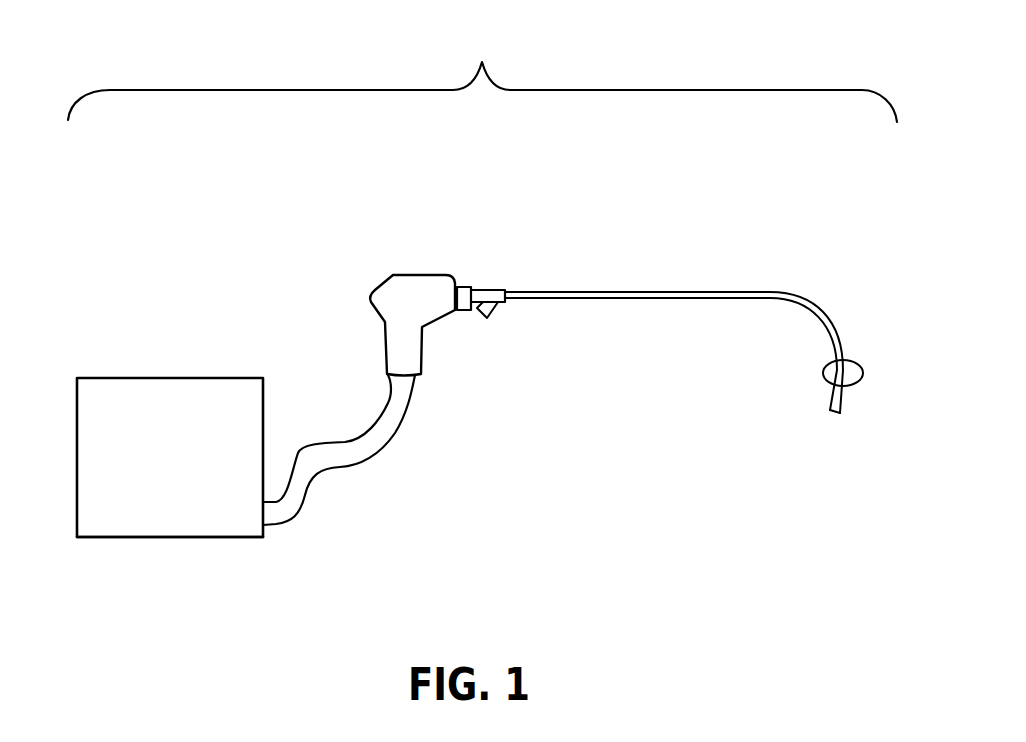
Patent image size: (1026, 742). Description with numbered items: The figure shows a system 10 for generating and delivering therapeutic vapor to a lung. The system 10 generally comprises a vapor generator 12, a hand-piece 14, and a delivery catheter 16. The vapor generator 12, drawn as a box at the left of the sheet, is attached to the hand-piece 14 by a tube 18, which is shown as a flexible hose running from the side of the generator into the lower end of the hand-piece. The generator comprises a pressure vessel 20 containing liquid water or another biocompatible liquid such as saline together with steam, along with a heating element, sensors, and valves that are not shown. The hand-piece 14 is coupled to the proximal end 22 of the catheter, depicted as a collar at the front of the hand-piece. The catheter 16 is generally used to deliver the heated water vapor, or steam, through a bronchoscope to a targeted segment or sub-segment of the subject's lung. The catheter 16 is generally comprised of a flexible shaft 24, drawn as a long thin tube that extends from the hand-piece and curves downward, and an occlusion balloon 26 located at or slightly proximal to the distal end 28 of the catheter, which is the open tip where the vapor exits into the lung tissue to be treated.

The system 10 is at (482, 77).
The vapor generator 12 is at (90, 324).
The hand-piece 14 is at (462, 362).
The delivery catheter 16 is at (657, 324).
The tube 18 is at (357, 467).
The pressure vessel 20 is at (143, 538).
The proximal end 22 is at (469, 254).
The flexible shaft 24 is at (643, 292).
The occlusion balloon 26 is at (855, 360).
The distal end 28 is at (864, 418).